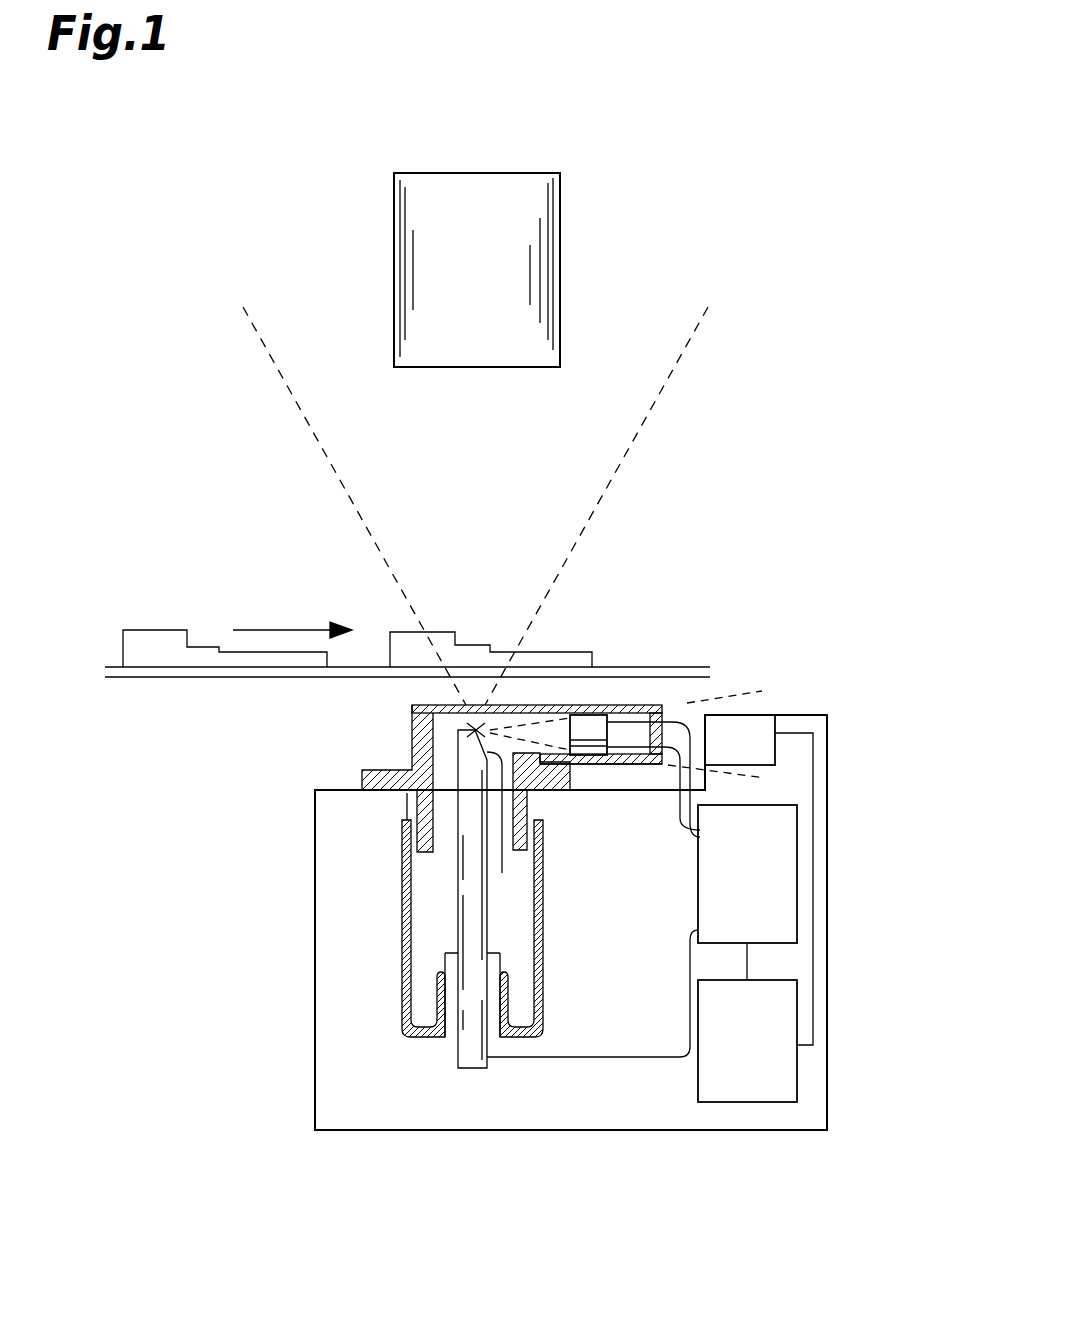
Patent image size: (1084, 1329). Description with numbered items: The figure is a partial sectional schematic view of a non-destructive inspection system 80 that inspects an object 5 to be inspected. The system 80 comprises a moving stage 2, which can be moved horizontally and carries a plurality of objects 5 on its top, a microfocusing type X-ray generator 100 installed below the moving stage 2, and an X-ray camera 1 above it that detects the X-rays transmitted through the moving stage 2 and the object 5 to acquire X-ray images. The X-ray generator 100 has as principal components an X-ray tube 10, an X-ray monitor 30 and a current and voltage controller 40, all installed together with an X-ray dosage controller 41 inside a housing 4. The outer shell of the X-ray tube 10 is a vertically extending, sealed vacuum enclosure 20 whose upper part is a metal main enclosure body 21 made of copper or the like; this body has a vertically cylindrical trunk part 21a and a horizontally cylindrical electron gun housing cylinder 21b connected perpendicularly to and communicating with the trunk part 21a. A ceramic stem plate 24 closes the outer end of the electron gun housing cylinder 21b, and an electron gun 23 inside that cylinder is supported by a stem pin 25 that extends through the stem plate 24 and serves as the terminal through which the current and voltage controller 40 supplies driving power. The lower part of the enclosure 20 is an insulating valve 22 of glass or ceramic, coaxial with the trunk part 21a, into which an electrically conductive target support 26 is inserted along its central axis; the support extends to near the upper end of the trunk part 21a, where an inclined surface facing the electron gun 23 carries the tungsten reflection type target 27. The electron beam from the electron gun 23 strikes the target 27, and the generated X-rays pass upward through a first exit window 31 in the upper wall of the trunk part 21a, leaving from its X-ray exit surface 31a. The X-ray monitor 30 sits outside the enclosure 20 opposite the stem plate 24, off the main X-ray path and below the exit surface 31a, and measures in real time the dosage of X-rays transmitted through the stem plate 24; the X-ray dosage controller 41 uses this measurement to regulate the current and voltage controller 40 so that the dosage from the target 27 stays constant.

The X-ray camera 1 is at (548, 182).
The moving stage 2 is at (196, 678).
The housing 4 is at (500, 1132).
The object to be inspected 5 is at (153, 638).
The X-ray tube 10 is at (392, 909).
The vacuum enclosure 20 is at (577, 853).
The main enclosure body 21 is at (601, 801).
The trunk part 21a is at (541, 792).
The electron gun housing cylinder 21b is at (600, 767).
The valve 22 is at (510, 926).
The electron gun 23 is at (596, 720).
The stem plate 24 is at (670, 714).
The stem pin 25 is at (633, 720).
The target support 26 is at (462, 1063).
The reflection type target 27 is at (505, 829).
The X-ray monitor 30 is at (770, 714).
The first exit window 31 is at (489, 766).
The X-ray exit surface 31a is at (445, 706).
The current and voltage controller 40 is at (783, 912).
The X-ray dosage controller 41 is at (780, 1085).
The non-destructive inspection system 80 is at (214, 1192).
The X-ray generator 100 is at (866, 997).